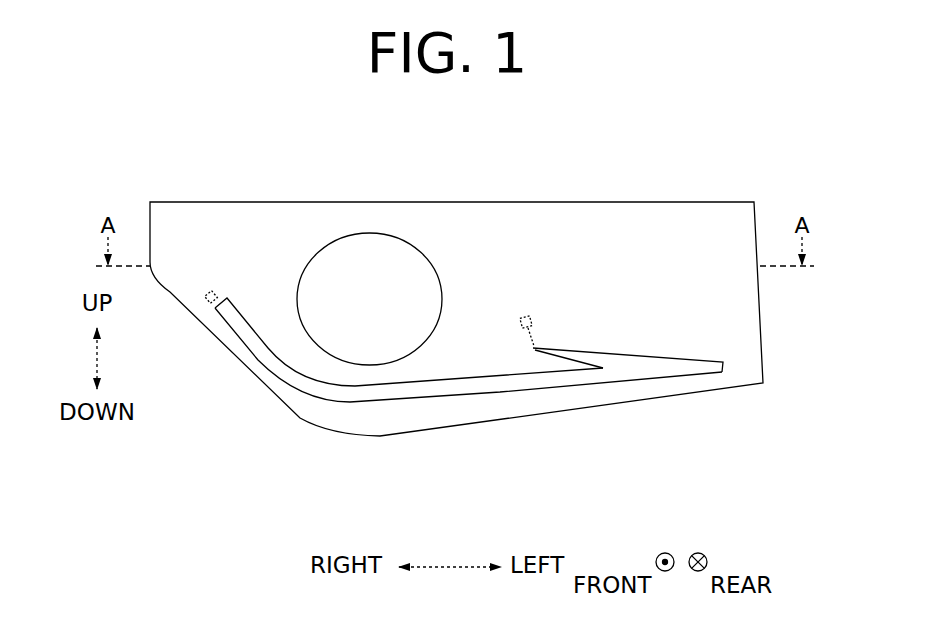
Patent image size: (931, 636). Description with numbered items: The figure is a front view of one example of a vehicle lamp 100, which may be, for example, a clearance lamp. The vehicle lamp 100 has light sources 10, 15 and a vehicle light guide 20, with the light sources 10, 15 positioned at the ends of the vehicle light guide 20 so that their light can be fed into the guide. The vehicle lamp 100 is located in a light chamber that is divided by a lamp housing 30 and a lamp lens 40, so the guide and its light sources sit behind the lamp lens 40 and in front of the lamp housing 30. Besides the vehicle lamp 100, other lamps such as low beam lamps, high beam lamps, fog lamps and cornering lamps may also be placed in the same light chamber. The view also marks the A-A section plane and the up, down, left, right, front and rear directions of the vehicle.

The vehicle lamp 100 is at (463, 313).
The lamp lens 40 is at (623, 217).
The vehicle light guide 20 is at (250, 357).
The lamp housing 30 is at (757, 226).
The light source 10 is at (207, 285).
The light source 15 is at (522, 309).